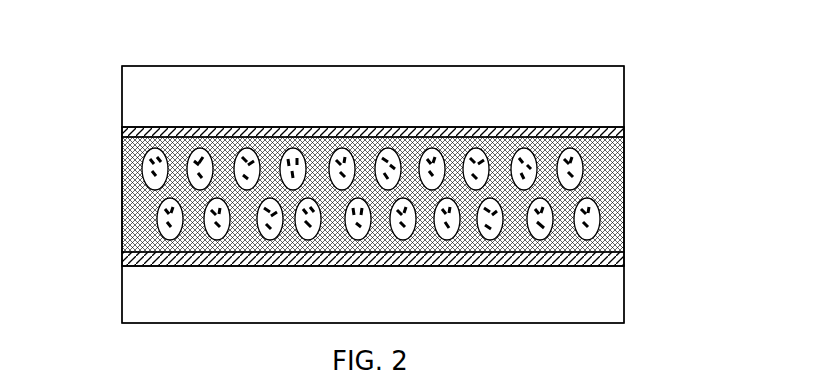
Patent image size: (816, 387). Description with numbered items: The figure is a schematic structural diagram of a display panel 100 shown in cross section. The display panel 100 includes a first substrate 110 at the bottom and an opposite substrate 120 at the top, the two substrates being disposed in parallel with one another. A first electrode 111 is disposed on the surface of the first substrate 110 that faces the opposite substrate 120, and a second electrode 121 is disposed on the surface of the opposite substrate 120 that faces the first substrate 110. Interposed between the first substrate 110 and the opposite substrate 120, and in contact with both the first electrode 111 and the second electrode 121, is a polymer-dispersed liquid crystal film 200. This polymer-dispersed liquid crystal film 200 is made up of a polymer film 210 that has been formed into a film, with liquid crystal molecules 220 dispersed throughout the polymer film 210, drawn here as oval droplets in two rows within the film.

The display panel 100 is at (114, 31).
The opposite substrate 120 is at (610, 109).
The second electrode 121 is at (122, 131).
The polymer-dispersed liquid crystal film 200 is at (122, 142).
The polymer film 210 is at (603, 167).
The liquid crystal molecules 220 is at (586, 222).
The first electrode 111 is at (122, 256).
The first substrate 110 is at (610, 298).